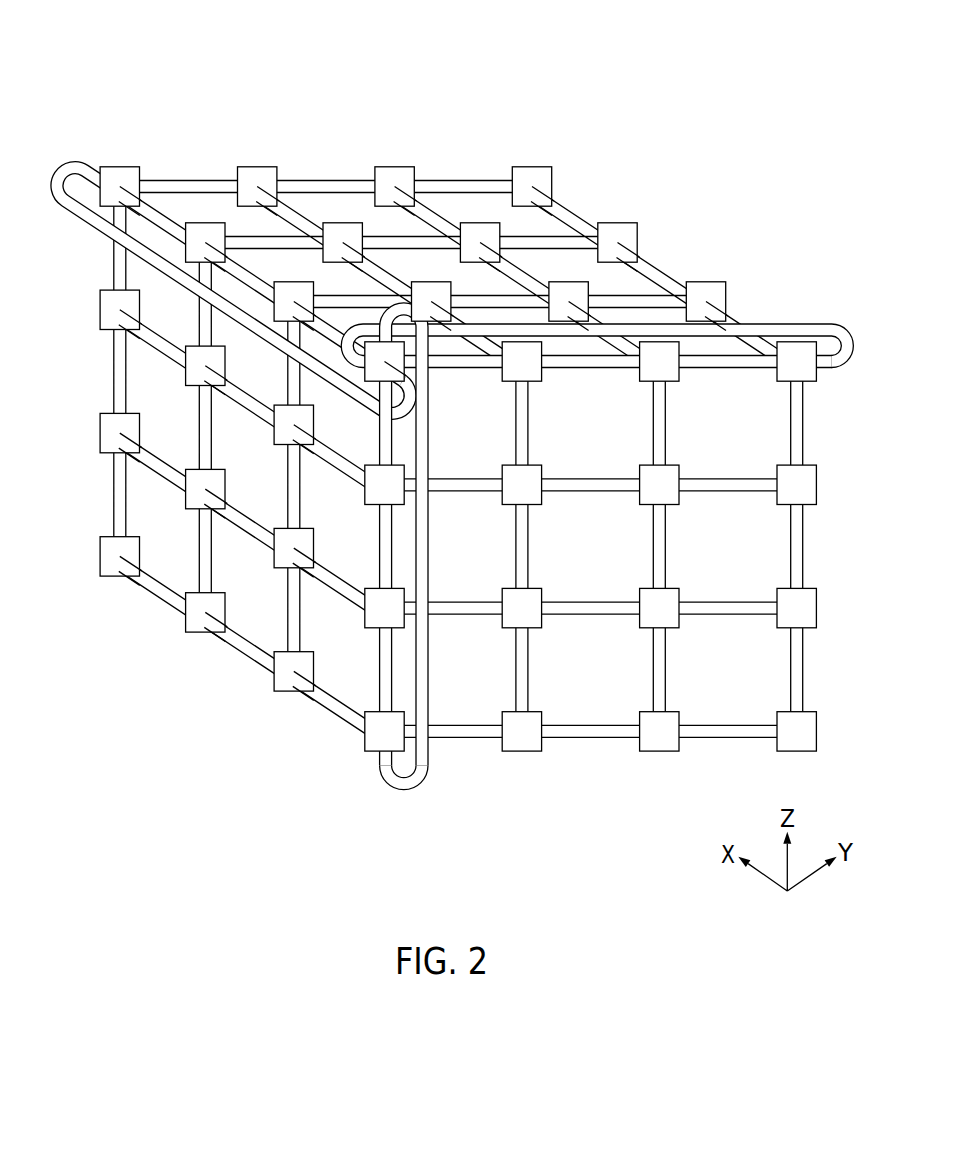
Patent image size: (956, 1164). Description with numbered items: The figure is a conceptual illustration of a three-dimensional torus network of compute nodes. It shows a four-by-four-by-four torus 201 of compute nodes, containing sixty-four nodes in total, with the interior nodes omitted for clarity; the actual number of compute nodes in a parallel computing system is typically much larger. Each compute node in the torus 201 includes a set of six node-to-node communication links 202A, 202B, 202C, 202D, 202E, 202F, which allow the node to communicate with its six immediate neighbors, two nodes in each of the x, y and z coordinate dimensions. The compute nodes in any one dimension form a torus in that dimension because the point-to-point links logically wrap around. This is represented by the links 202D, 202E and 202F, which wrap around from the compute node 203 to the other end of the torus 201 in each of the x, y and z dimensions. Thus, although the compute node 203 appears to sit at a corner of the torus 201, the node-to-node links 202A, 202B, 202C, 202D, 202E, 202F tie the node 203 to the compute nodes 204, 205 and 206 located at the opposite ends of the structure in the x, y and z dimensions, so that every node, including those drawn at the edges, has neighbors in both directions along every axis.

The torus 201 is at (594, 97).
The node-to-node communication link 202A is at (448, 369).
The node-to-node communication link 202B is at (392, 444).
The node-to-node communication link 202C is at (344, 332).
The node-to-node communication link 202D is at (818, 324).
The node-to-node communication link 202E is at (402, 790).
The node-to-node communication link 202F is at (69, 163).
The compute node 203 is at (378, 358).
The compute node 204 is at (121, 173).
The compute node 205 is at (800, 367).
The compute node 206 is at (376, 737).